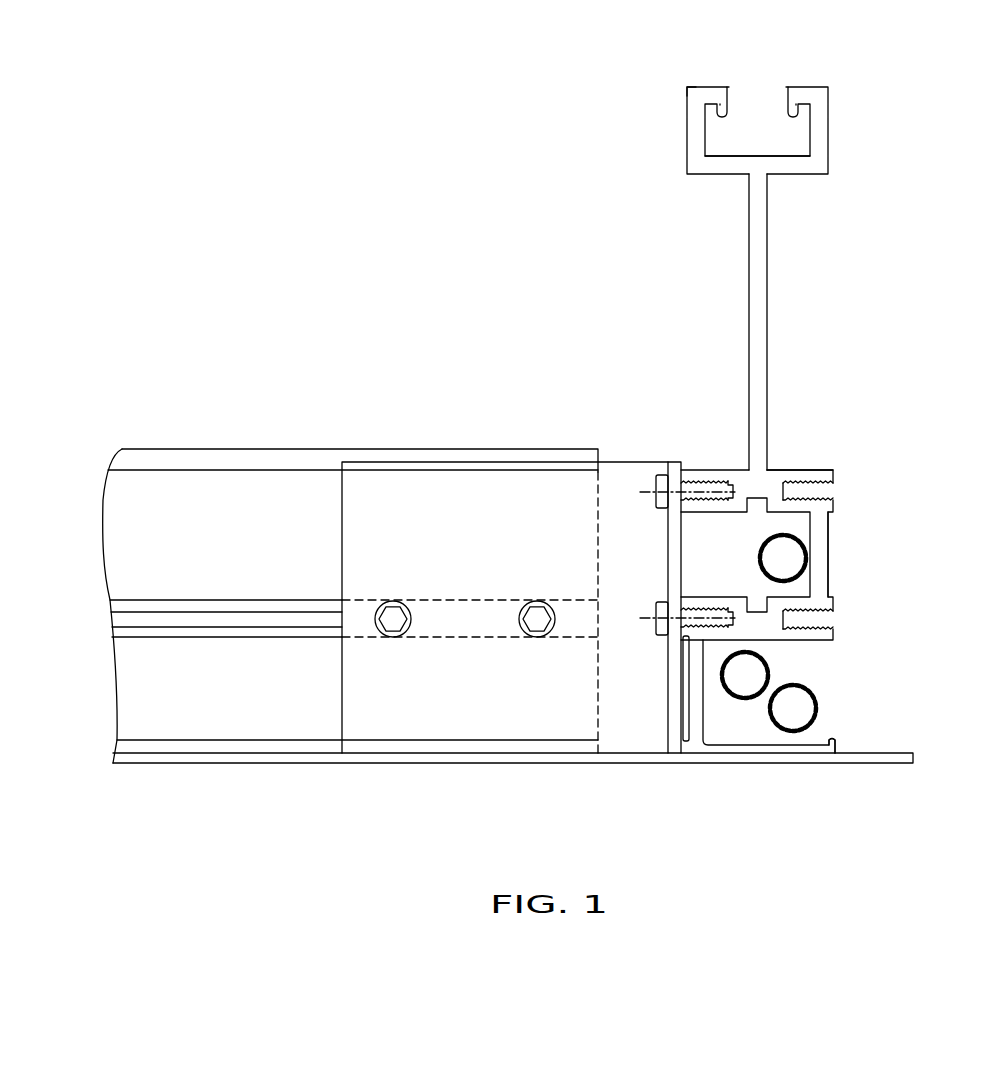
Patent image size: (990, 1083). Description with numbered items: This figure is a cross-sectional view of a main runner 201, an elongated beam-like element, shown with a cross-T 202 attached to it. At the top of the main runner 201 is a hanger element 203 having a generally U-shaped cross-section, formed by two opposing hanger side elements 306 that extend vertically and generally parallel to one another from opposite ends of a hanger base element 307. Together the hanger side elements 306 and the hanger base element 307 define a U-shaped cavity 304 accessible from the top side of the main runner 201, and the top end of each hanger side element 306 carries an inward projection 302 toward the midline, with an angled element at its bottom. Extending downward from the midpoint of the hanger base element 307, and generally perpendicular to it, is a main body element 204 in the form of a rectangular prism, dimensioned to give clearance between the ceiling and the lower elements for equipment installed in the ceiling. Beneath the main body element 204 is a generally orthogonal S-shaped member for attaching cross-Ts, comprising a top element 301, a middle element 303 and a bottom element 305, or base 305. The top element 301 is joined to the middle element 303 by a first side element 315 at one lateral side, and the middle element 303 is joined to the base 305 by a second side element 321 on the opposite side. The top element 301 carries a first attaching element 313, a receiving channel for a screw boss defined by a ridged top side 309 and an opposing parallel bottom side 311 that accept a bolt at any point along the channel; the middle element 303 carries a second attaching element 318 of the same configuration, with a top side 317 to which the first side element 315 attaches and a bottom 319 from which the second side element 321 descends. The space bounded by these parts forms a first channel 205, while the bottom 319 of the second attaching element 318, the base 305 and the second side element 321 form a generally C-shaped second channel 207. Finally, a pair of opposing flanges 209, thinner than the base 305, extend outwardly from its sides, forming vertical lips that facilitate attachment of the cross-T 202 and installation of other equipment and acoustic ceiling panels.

The main runner 201 is at (833, 260).
The cross-T 202 is at (192, 502).
The hanger element 203 is at (687, 152).
The main body element 204 is at (749, 325).
The first channel 205 is at (733, 552).
The second channel 207 is at (795, 672).
The flanges 209 is at (637, 762).
The top element 301 is at (830, 470).
The inward projection 302 is at (693, 86).
The middle element 303 is at (830, 592).
The U-shaped cavity 304 is at (772, 100).
The bottom element 305 is at (812, 755).
The hanger side elements 306 is at (687, 107).
The hanger base element 307 is at (718, 175).
The top side 309 is at (702, 470).
The bottom side 311 is at (683, 518).
The first attaching element 313 is at (815, 492).
The first side element 315 is at (830, 537).
The top side of second attaching element 317 is at (668, 593).
The second attaching element 318 is at (818, 623).
The bottom of second attaching element 319 is at (710, 653).
The second side element 321 is at (697, 725).